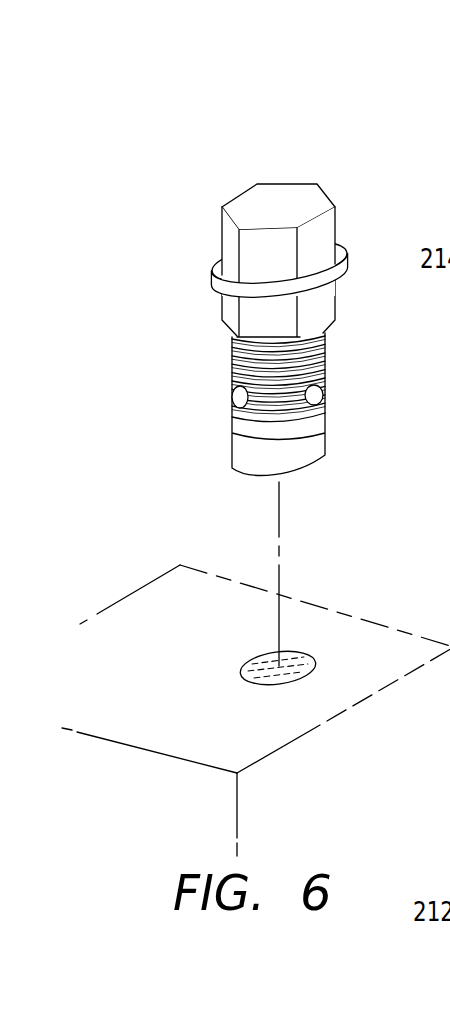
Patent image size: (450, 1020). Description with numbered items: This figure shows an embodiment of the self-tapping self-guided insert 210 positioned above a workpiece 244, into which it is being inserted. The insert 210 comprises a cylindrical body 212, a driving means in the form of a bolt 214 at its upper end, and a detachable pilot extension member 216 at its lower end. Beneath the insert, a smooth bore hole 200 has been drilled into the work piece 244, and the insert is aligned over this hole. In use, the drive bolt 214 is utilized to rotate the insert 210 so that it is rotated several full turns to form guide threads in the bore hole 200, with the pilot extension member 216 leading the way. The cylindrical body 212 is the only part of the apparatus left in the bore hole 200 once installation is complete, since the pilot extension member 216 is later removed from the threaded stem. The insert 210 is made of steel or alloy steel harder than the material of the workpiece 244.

The self-tapping self-guided insert 210 is at (352, 170).
The bolt 214 is at (212, 233).
The cylindrical body 212 is at (222, 355).
The detachable pilot extension member 216 is at (222, 452).
The bore hole 200 is at (296, 660).
The workpiece 244 is at (209, 644).